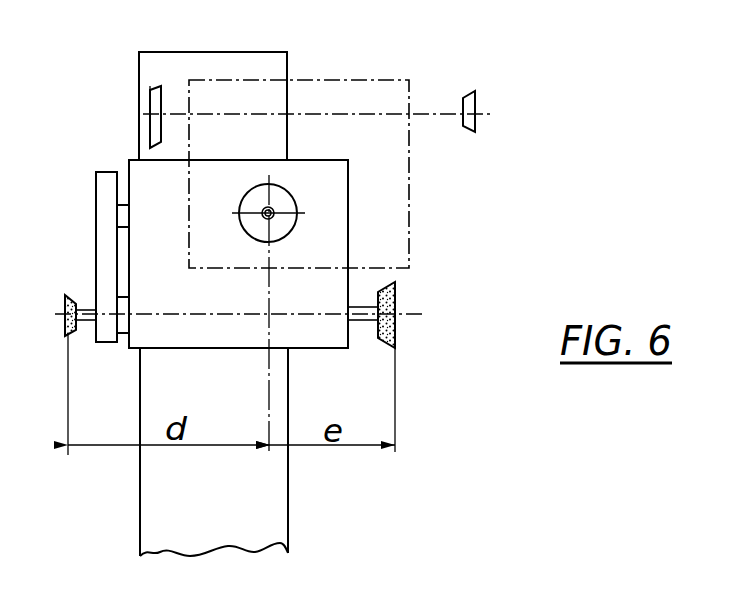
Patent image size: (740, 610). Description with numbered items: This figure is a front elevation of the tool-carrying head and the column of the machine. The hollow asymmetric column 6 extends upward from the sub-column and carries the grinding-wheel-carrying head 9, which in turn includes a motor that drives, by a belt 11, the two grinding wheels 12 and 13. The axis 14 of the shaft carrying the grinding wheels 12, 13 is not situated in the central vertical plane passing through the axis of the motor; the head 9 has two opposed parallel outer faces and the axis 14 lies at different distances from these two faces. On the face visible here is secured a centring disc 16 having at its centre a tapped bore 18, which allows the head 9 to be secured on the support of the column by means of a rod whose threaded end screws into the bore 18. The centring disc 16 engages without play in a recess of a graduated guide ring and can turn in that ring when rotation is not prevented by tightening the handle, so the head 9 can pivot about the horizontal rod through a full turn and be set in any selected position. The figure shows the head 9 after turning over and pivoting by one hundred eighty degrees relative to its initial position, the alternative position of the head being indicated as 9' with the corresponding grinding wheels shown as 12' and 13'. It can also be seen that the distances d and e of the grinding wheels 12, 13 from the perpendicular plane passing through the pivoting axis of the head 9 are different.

The column 6 is at (268, 532).
The grinding-wheel-carrying head 9 is at (222, 200).
The chuck body in alternative position 9' is at (317, 145).
The belt 11 is at (106, 192).
The grinding wheel 12 is at (89, 347).
The clamping jaw in alternative position 12' is at (479, 143).
The grinding wheel 13 is at (399, 307).
The clamping jaw in alternative position 13' is at (186, 77).
The axis of the shaft carrying the grinding wheels 14 is at (216, 318).
The centring disc 16 is at (282, 224).
The tapped bore 18 is at (272, 211).